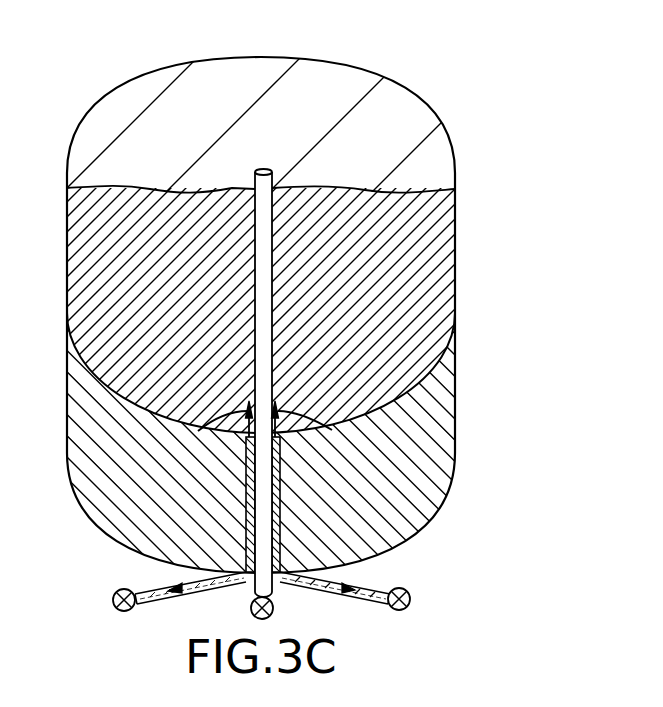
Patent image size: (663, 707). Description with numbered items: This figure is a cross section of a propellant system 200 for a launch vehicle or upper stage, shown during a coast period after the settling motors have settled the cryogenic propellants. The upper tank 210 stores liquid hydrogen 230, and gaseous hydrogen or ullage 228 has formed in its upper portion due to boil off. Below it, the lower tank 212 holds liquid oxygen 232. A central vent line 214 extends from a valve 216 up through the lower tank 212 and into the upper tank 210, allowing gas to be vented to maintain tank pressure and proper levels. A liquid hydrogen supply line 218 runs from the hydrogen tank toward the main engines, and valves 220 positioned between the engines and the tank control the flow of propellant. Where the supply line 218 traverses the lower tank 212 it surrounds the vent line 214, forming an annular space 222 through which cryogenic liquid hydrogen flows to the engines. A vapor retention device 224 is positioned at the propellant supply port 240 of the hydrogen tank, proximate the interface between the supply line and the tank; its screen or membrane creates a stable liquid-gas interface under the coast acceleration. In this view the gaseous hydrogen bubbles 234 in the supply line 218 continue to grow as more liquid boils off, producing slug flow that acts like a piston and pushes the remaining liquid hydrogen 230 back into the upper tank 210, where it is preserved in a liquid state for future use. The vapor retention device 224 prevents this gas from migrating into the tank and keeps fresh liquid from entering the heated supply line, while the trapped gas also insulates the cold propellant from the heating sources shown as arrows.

The propellant system 200 is at (503, 74).
The upper tank 210 is at (455, 202).
The lower tank 212 is at (455, 440).
The central vent line 214 is at (255, 263).
The valve 216 is at (274, 609).
The liquid hydrogen supply line 218 is at (246, 484).
The valves 220 is at (113, 592).
The annular space 222 is at (281, 510).
The vapor retention device 224 is at (233, 424).
The ullage 228 is at (333, 84).
The liquid hydrogen 230 is at (425, 267).
The liquid oxygen 232 is at (428, 392).
The gaseous hydrogen bubbles 234 is at (150, 605).
The propellant supply port 240 is at (246, 437).